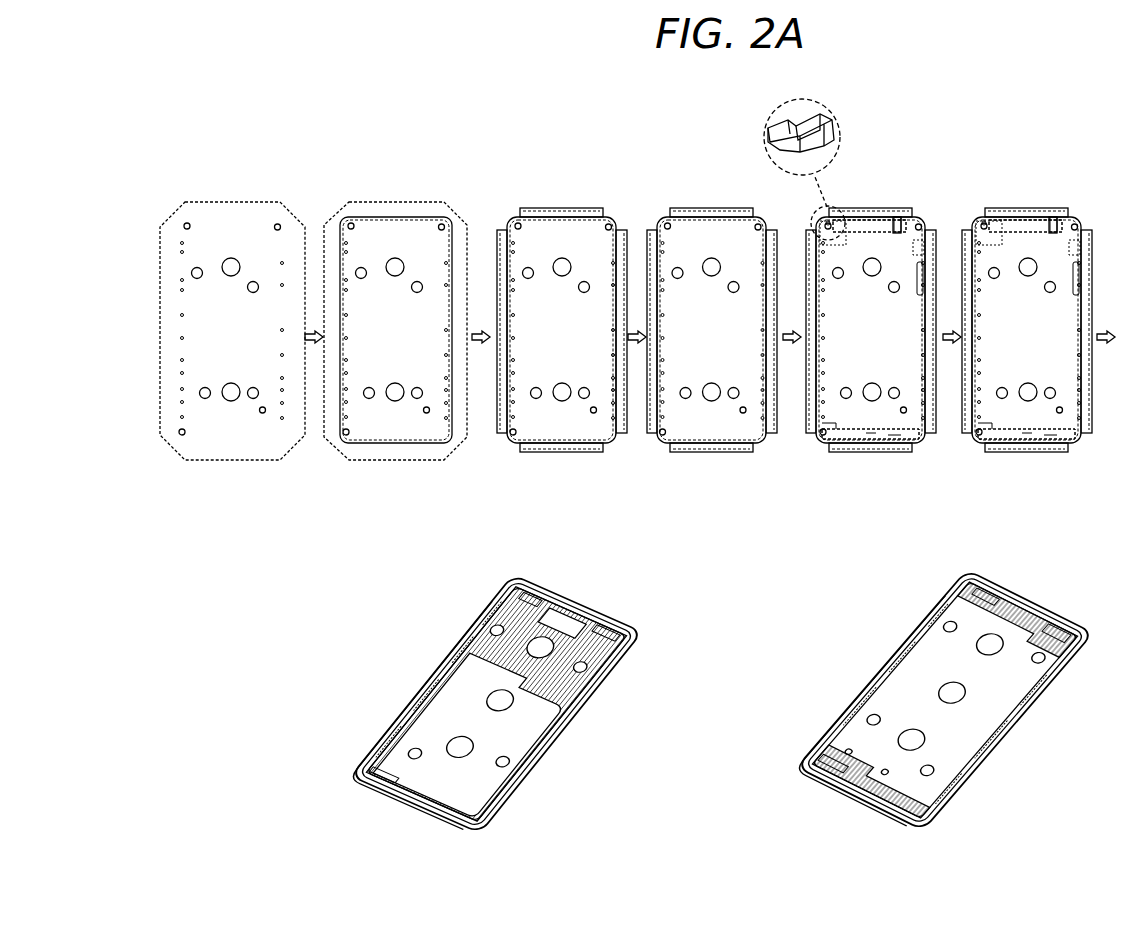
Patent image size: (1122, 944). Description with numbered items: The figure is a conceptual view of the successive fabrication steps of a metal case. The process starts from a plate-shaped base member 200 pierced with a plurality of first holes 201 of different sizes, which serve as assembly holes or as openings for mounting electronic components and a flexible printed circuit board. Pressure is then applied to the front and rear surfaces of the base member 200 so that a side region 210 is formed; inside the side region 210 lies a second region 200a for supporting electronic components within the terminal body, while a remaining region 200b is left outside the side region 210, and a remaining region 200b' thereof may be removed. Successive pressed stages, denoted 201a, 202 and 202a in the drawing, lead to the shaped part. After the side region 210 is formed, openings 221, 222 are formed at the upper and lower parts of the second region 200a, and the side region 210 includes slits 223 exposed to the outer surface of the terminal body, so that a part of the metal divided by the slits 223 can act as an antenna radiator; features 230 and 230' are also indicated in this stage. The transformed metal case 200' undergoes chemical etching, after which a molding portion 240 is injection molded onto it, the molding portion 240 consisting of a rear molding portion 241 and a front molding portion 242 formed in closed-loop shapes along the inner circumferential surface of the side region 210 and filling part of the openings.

The base member 200 is at (232, 295).
The second region 200a is at (412, 237).
The remaining region 200b is at (412, 352).
The remaining region 200b' is at (796, 355).
The first holes 201 is at (232, 397).
The first pressed region 201a is at (578, 237).
The cut portion 202 is at (713, 445).
The second pressed region 202a is at (728, 237).
The side region 210 is at (357, 443).
The opening 221 is at (870, 436).
The opening 222 is at (865, 220).
The slits 223 is at (835, 145).
The injection molded portion 230 is at (1067, 194).
The injection hole 230' is at (911, 194).
The molding portion 240 is at (797, 681).
The rear molding portion 241 is at (622, 665).
The front molding portion 242 is at (1063, 613).
The metal case 200' is at (721, 701).